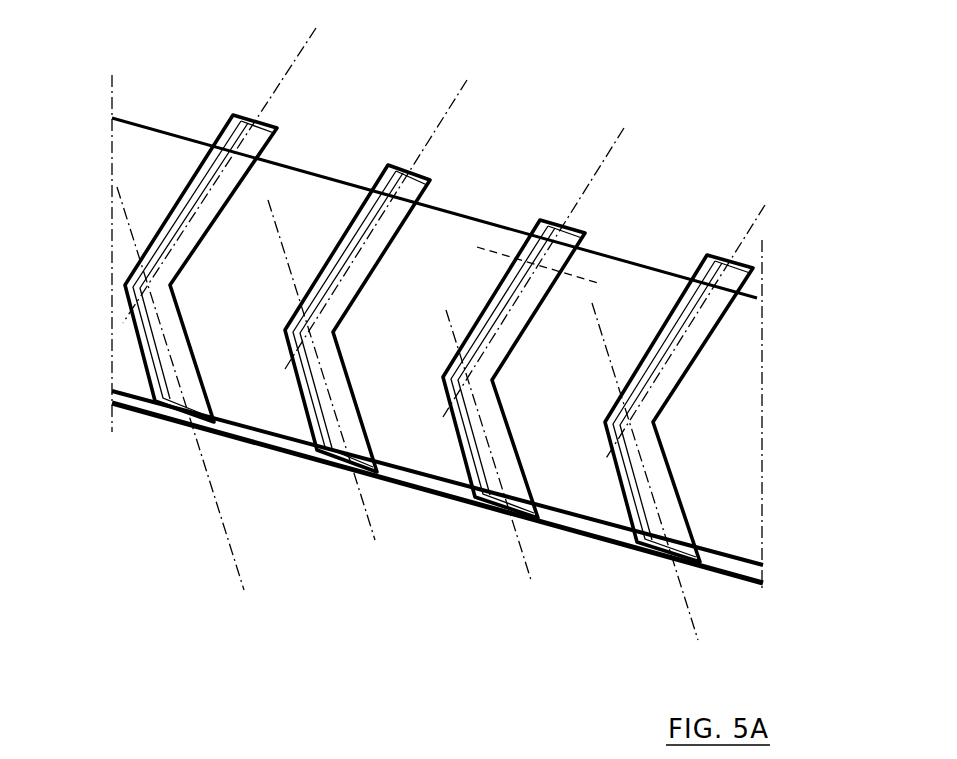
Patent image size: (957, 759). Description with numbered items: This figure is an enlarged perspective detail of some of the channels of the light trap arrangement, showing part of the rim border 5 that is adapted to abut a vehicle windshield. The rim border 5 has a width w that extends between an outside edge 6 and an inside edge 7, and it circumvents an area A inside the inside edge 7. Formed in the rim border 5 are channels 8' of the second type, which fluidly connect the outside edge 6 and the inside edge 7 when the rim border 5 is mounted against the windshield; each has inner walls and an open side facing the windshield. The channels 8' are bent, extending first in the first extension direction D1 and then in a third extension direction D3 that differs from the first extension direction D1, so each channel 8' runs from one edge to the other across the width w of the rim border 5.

The rim border 5 is at (140, 194).
The outside edge 6 is at (140, 417).
The inside edge 7 is at (195, 143).
The channels 8' is at (439, 415).
The first extension direction D1 is at (290, 70).
The third extension direction D3 is at (278, 230).
The area A is at (472, 245).
The width w is at (753, 302).